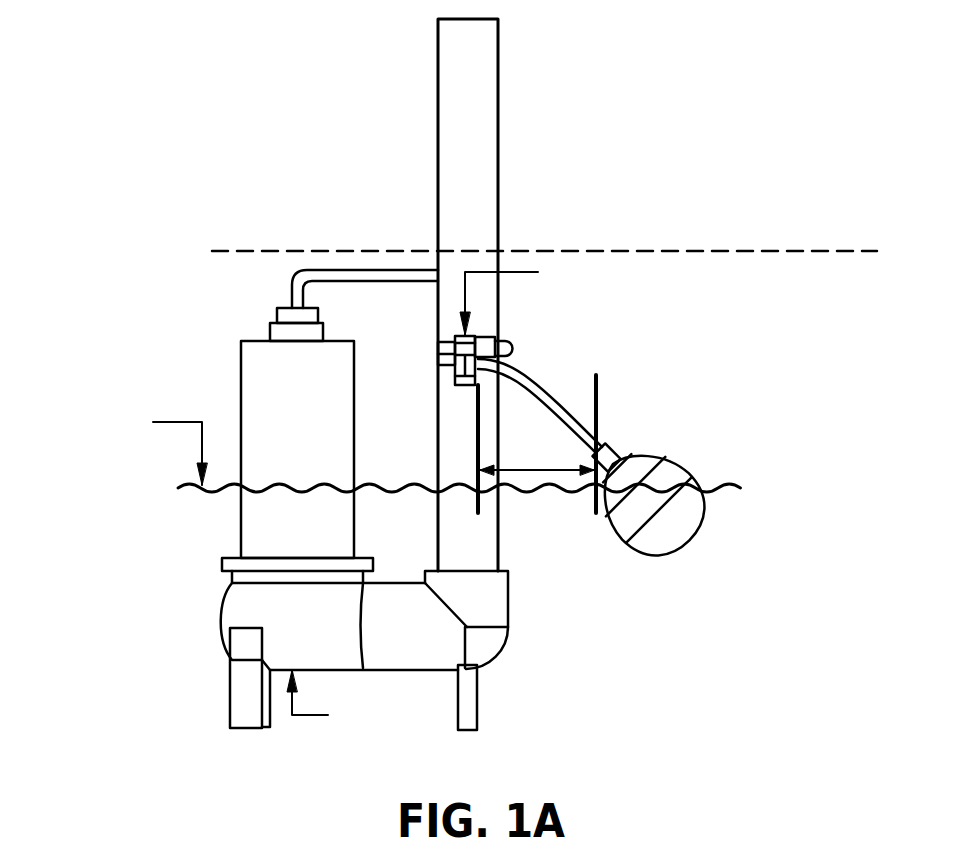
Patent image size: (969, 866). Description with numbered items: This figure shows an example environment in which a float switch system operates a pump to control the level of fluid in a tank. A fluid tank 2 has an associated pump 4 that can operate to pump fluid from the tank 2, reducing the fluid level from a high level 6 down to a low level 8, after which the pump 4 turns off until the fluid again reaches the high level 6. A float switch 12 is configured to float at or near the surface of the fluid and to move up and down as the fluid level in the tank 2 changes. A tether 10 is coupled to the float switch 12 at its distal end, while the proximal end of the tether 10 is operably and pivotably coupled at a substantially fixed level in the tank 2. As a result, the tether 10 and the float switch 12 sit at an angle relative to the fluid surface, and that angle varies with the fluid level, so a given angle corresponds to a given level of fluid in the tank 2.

The fluid tank 2 is at (472, 377).
The pump 4 is at (241, 397).
The high level 6 is at (613, 250).
The low level 8 is at (418, 485).
The tether 10 is at (548, 387).
The float switch 12 is at (682, 482).